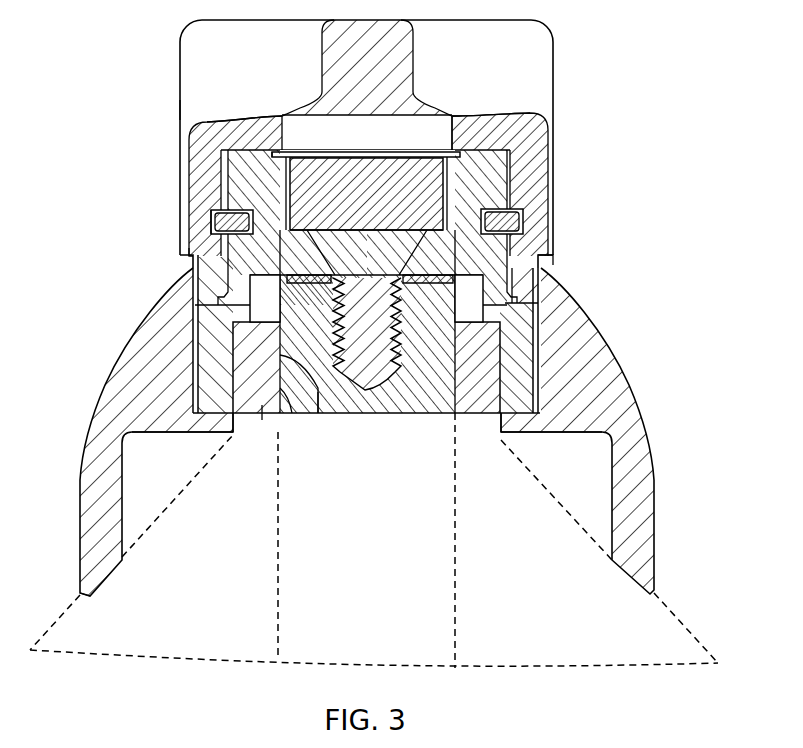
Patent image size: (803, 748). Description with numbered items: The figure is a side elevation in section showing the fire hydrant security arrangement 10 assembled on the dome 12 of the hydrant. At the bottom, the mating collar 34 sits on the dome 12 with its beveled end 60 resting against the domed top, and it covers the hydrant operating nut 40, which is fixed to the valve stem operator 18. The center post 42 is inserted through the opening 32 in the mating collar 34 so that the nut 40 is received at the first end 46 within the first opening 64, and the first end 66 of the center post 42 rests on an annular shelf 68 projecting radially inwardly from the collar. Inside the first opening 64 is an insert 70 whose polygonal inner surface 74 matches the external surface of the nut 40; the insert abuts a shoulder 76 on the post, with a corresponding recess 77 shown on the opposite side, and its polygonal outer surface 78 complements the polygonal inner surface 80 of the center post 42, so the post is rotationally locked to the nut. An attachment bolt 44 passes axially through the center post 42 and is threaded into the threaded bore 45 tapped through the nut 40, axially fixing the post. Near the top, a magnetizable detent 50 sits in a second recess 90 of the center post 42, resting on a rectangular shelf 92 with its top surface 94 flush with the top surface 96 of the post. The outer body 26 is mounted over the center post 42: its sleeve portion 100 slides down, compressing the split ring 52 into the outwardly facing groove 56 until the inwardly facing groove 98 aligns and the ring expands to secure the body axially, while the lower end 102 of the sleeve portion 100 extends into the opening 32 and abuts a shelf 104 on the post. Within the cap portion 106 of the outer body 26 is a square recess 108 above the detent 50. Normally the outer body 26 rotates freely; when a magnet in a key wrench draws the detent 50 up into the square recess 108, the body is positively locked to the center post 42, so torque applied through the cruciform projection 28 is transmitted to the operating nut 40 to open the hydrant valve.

The fire hydrant security arrangement 10 is at (178, 100).
The dome 12 is at (212, 533).
The valve stem operator 18 is at (458, 528).
The outer body 26 is at (556, 135).
The cruciform projection 28 is at (418, 57).
The opening 32 is at (195, 284).
The mating collar 34 is at (627, 384).
The hydrant operating nut 40 is at (365, 414).
The center post 42 is at (219, 172).
The attachment bolt 44 is at (376, 264).
The threaded bore 45 is at (334, 332).
The first end 46 is at (238, 418).
The magnetizable detent 50 is at (348, 204).
The split ring 52 is at (215, 216).
The outwardly facing groove 56 is at (188, 246).
The beveled end 60 is at (112, 582).
The first opening 64 is at (292, 420).
The first end 66 is at (478, 416).
The annular shelf 68 is at (205, 433).
The insert 70 is at (262, 418).
The polygonal inner surface 74 is at (318, 420).
The shoulder 76 is at (457, 305).
The recess 77 is at (270, 316).
The polygonal outer surface 78 is at (222, 420).
The polygonal inner surface 80 is at (496, 372).
The second recess 90 is at (288, 150).
The rectangular shelf 92 is at (436, 228).
The top surface 94 is at (400, 152).
The top surface 96 is at (494, 130).
The inwardly facing groove 98 is at (211, 222).
The sleeve portion 100 is at (540, 171).
The lower end 102 is at (545, 268).
The shelf 104 is at (546, 292).
The cap portion 106 is at (235, 122).
The square recess 108 is at (440, 118).